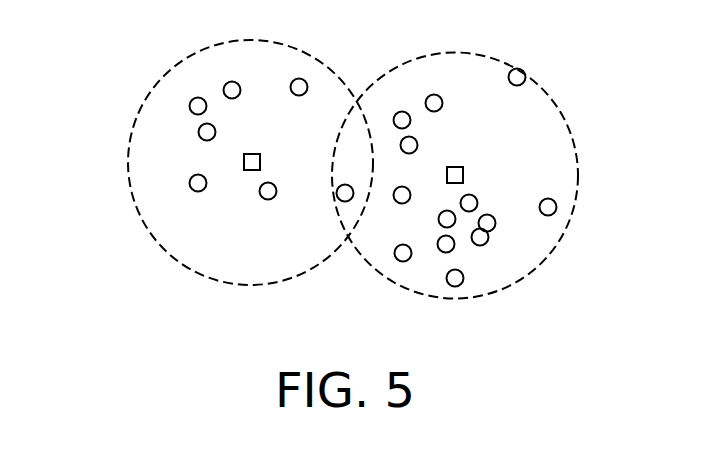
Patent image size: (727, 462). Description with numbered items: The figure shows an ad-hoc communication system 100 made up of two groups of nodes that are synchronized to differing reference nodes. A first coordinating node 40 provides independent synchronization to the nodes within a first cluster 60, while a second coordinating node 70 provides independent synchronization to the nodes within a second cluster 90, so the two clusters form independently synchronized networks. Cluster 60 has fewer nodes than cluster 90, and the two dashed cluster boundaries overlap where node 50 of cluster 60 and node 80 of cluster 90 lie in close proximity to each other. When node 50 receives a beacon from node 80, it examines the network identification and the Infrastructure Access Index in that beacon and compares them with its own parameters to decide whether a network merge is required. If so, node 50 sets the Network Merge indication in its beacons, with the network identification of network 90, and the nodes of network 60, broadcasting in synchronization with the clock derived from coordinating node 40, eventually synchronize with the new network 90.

The ad-hoc communication system 100 is at (330, 440).
The cluster 60 is at (147, 99).
The cluster 90 is at (568, 130).
The coordinating node 40 is at (260, 158).
The coordinating node 70 is at (464, 173).
The node 50 is at (337, 194).
The node 80 is at (407, 188).